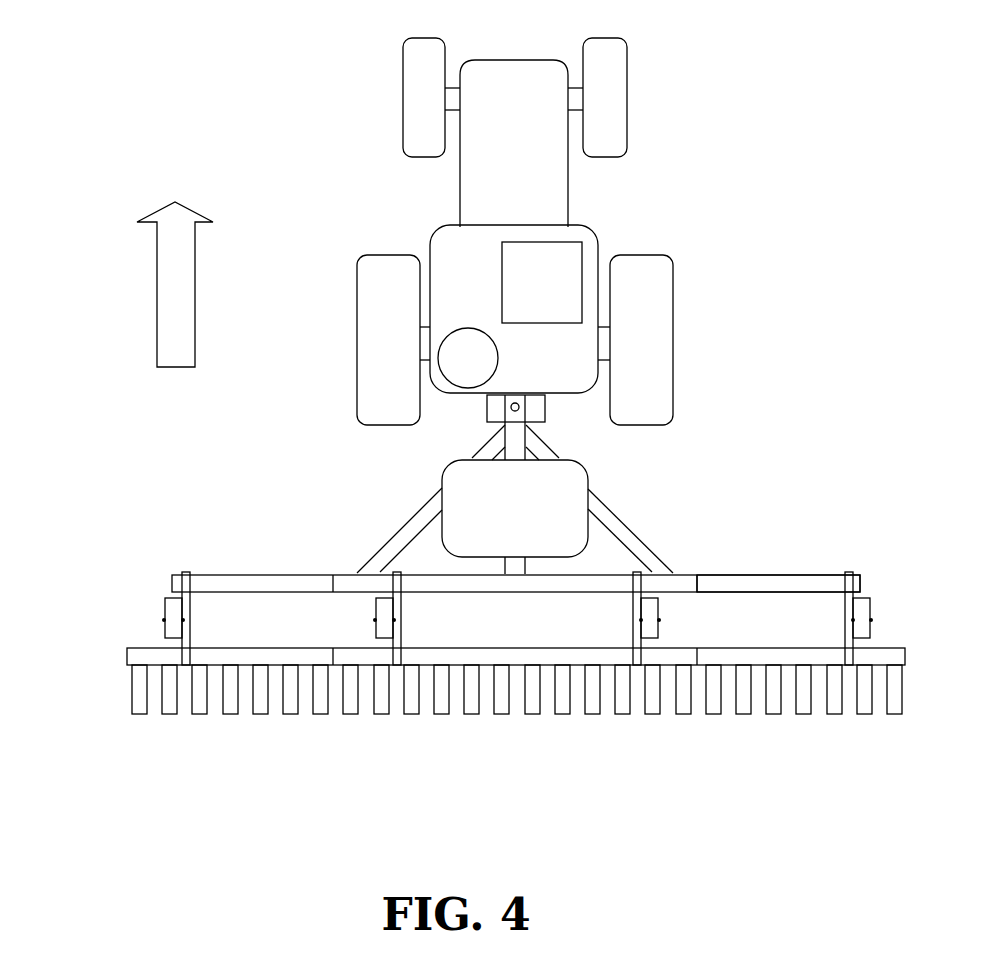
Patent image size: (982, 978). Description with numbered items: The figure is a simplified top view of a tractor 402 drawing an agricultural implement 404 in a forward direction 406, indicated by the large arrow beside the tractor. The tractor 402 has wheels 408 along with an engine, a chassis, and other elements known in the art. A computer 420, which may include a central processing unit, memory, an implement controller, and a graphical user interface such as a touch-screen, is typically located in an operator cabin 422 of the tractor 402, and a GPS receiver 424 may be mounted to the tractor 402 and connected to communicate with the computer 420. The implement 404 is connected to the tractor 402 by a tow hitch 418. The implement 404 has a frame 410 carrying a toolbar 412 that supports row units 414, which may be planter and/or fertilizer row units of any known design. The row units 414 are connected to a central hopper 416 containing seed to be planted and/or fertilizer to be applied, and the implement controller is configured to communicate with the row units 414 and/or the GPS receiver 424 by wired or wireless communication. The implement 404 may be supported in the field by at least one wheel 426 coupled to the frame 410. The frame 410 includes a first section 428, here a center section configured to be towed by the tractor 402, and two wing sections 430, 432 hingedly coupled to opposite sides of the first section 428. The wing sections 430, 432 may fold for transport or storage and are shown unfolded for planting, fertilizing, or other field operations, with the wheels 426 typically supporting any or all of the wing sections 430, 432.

The tractor 402 is at (323, 78).
The agricultural implement 404 is at (243, 497).
The forward direction 406 is at (157, 292).
The wheels 408 is at (627, 108).
The frame 410 is at (650, 552).
The toolbar 412 is at (128, 650).
The row units 414 is at (132, 690).
The central hopper 416 is at (588, 500).
The tow hitch 418 is at (511, 408).
The computer 420 is at (542, 282).
The operator cabin 422 is at (593, 235).
The GPS receiver 424 is at (468, 358).
The wheel 426 is at (165, 618).
The first section 428 is at (363, 578).
The wing section 430 is at (750, 578).
The wing section 432 is at (202, 580).